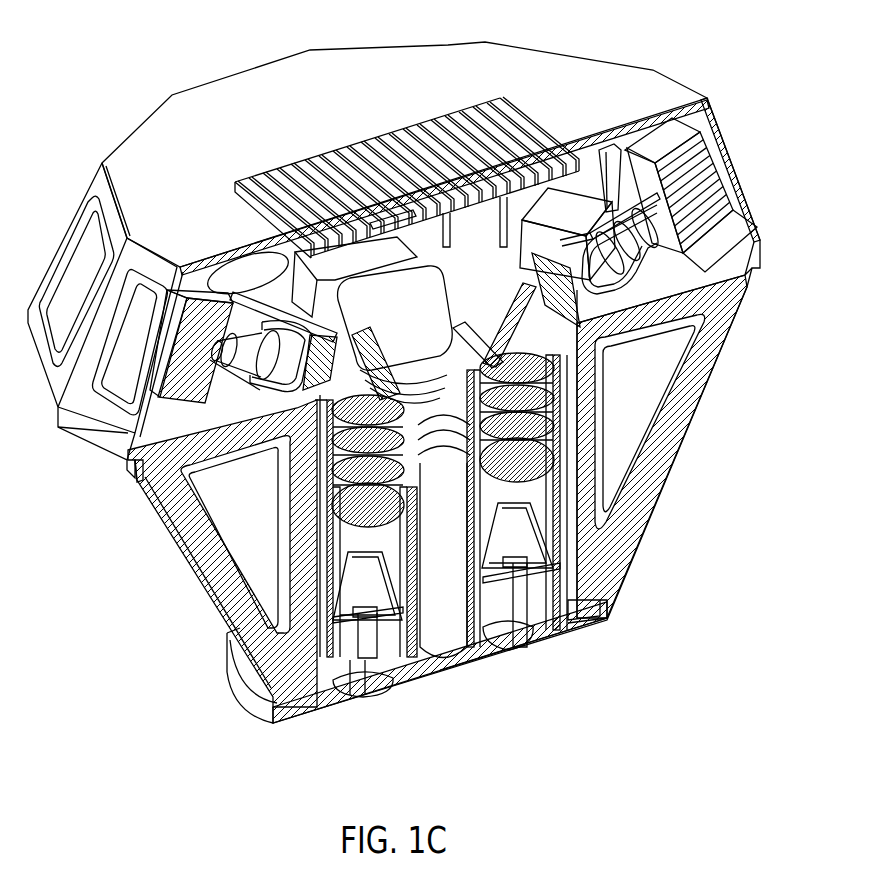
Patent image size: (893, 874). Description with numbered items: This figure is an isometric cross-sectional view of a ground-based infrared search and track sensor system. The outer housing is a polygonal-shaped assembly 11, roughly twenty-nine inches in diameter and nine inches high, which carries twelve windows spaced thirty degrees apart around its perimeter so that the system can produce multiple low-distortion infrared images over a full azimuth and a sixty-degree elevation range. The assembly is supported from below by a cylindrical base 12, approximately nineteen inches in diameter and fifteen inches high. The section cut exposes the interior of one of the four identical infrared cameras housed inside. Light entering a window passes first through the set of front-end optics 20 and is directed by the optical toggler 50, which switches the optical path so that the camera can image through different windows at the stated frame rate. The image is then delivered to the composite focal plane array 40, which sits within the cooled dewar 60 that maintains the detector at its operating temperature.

The polygonal-shaped assembly 11 is at (430, 58).
The optical toggler 50 is at (707, 183).
The set of front-end optics 20 is at (638, 240).
The dewar 60 is at (551, 370).
The composite focal plane array 40 is at (567, 585).
The cylindrical base 12 is at (343, 688).